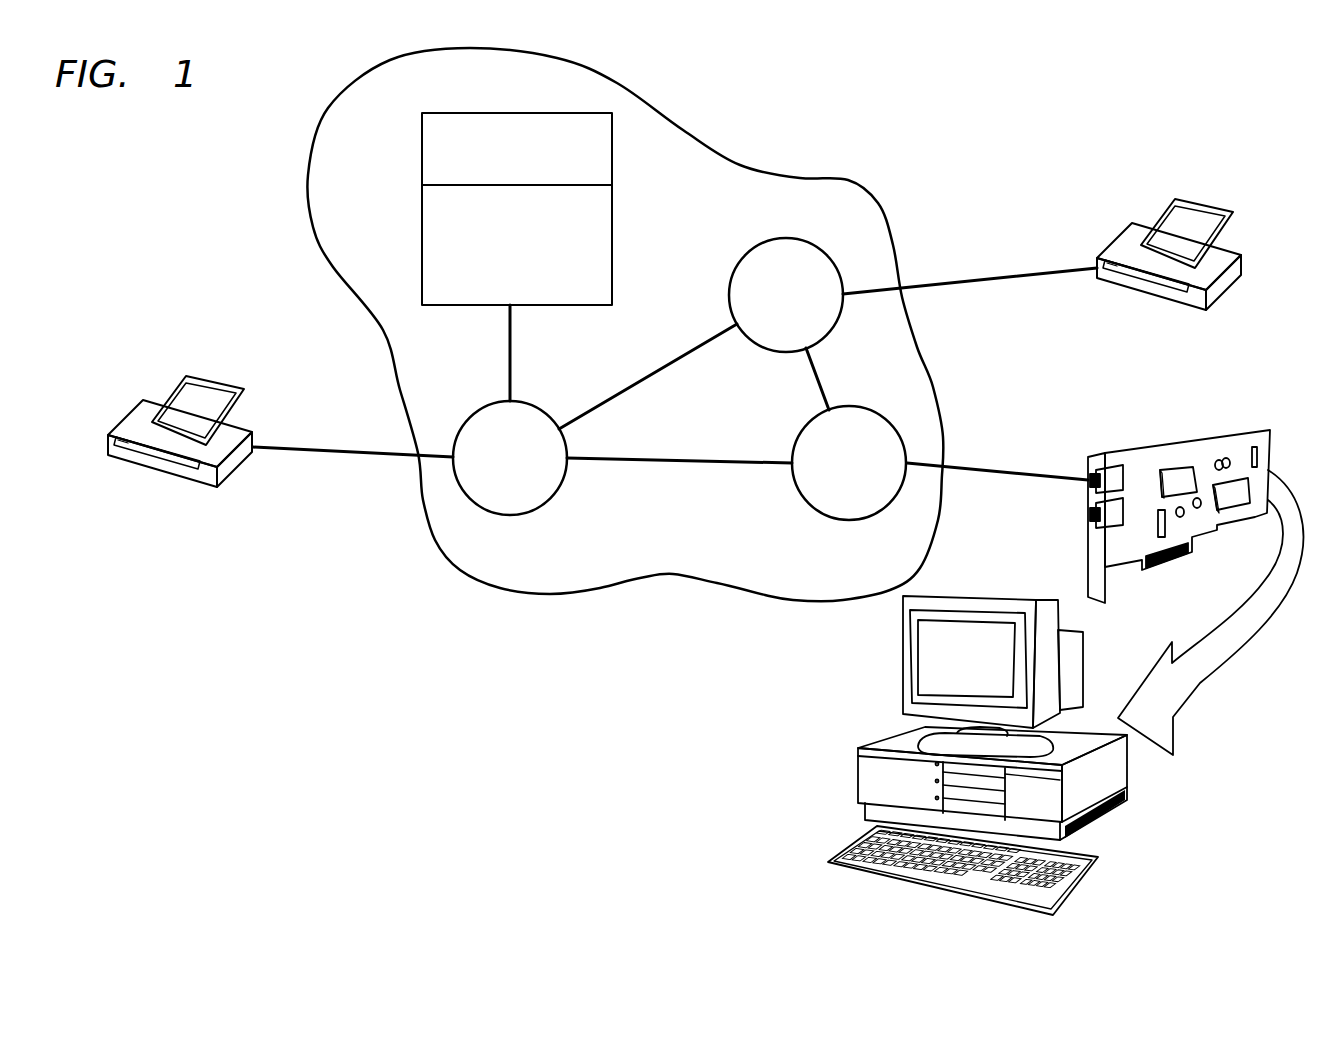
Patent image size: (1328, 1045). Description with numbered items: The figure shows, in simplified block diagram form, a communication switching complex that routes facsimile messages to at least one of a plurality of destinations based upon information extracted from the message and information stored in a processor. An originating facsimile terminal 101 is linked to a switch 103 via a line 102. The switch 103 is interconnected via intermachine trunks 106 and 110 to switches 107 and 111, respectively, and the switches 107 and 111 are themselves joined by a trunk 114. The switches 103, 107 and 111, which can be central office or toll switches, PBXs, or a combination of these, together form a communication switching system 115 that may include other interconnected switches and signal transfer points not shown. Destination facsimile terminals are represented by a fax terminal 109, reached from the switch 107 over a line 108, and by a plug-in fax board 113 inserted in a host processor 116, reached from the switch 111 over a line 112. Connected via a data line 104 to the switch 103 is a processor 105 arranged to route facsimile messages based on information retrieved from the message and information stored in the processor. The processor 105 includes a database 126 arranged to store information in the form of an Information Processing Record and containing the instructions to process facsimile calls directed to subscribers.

The originating facsimile terminal 101 is at (217, 380).
The line 102 is at (333, 457).
The switch 103 is at (512, 514).
The data line 104 is at (508, 345).
The processor 105 is at (422, 242).
The intermachine trunk 106 is at (675, 350).
The switch 107 is at (788, 238).
The line 108 is at (940, 284).
The fax terminal 109 is at (1203, 200).
The intermachine trunk 110 is at (677, 468).
The switch 111 is at (853, 519).
The line 112 is at (998, 473).
The plug-in fax board 113 is at (1250, 433).
The trunk 114 is at (838, 381).
The communication switching system 115 is at (765, 595).
The processor 116 is at (1127, 790).
The database 126 is at (422, 140).